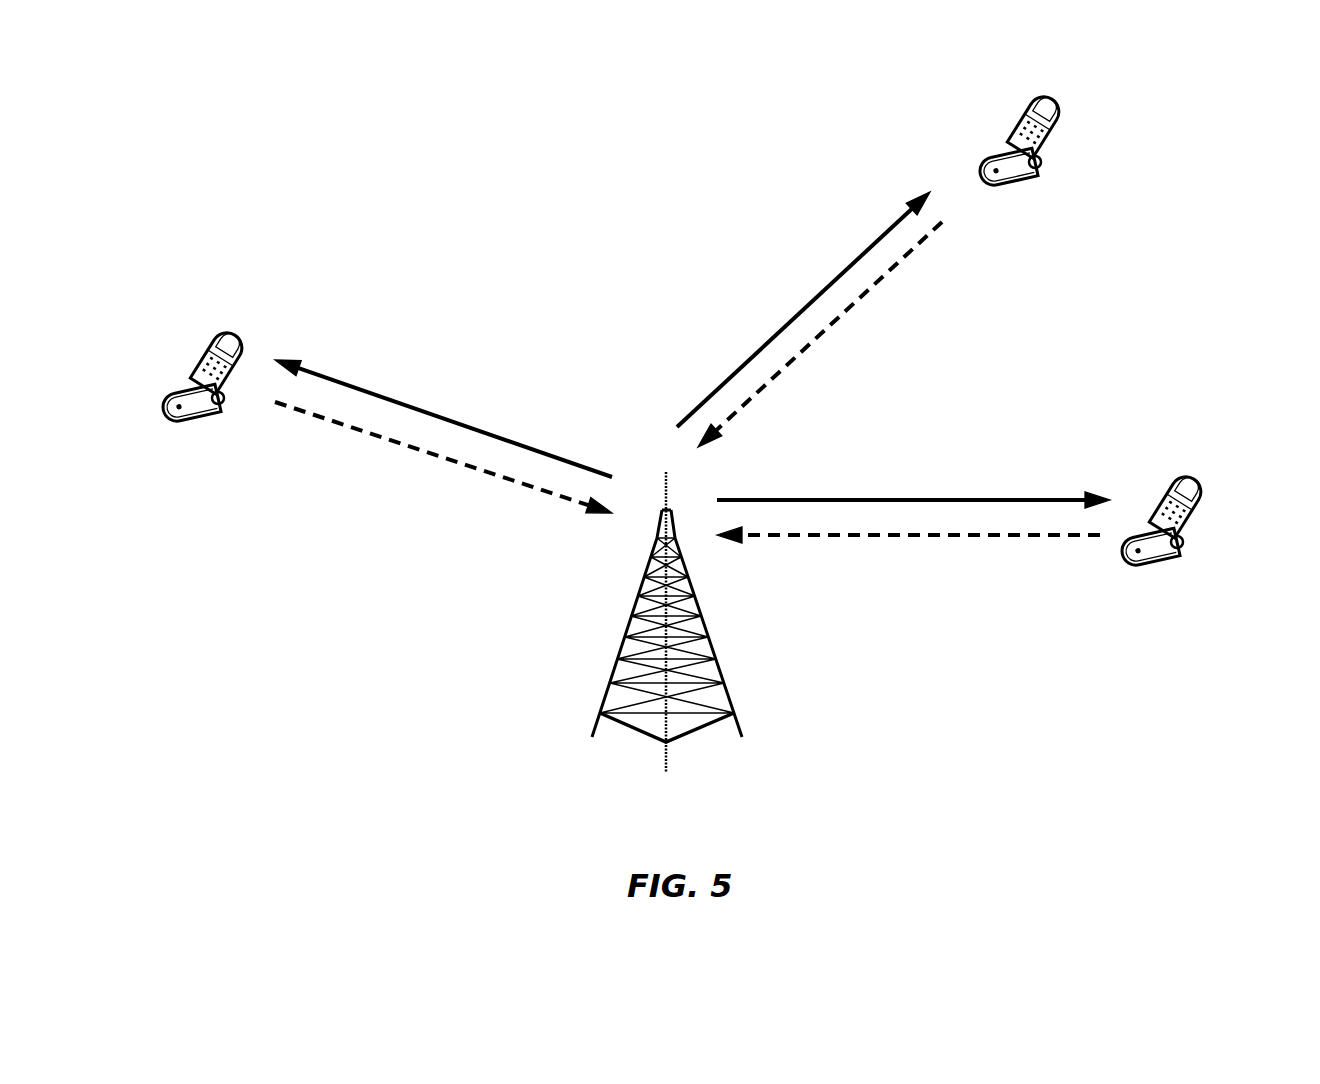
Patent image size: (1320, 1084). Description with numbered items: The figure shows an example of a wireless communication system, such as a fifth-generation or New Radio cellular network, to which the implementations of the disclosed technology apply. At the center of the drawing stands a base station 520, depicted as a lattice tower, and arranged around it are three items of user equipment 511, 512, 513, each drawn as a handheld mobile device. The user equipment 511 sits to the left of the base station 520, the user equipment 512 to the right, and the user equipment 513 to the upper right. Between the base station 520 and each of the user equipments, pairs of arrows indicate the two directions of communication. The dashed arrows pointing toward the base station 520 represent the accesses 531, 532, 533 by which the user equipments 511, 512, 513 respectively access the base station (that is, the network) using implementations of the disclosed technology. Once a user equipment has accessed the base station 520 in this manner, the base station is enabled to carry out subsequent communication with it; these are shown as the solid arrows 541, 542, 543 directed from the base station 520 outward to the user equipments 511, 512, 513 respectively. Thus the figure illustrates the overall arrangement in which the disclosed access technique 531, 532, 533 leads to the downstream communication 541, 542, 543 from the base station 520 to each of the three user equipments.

The user equipment 511 is at (213, 418).
The user equipment 512 is at (1172, 562).
The user equipment 513 is at (1030, 182).
The base station 520 is at (723, 695).
The access using the disclosed technology 531 is at (482, 472).
The access using the disclosed technology 532 is at (873, 537).
The access using the disclosed technology 533 is at (847, 308).
The subsequent communication 541 is at (382, 395).
The subsequent communication 542 is at (1020, 498).
The subsequent communication 543 is at (852, 262).